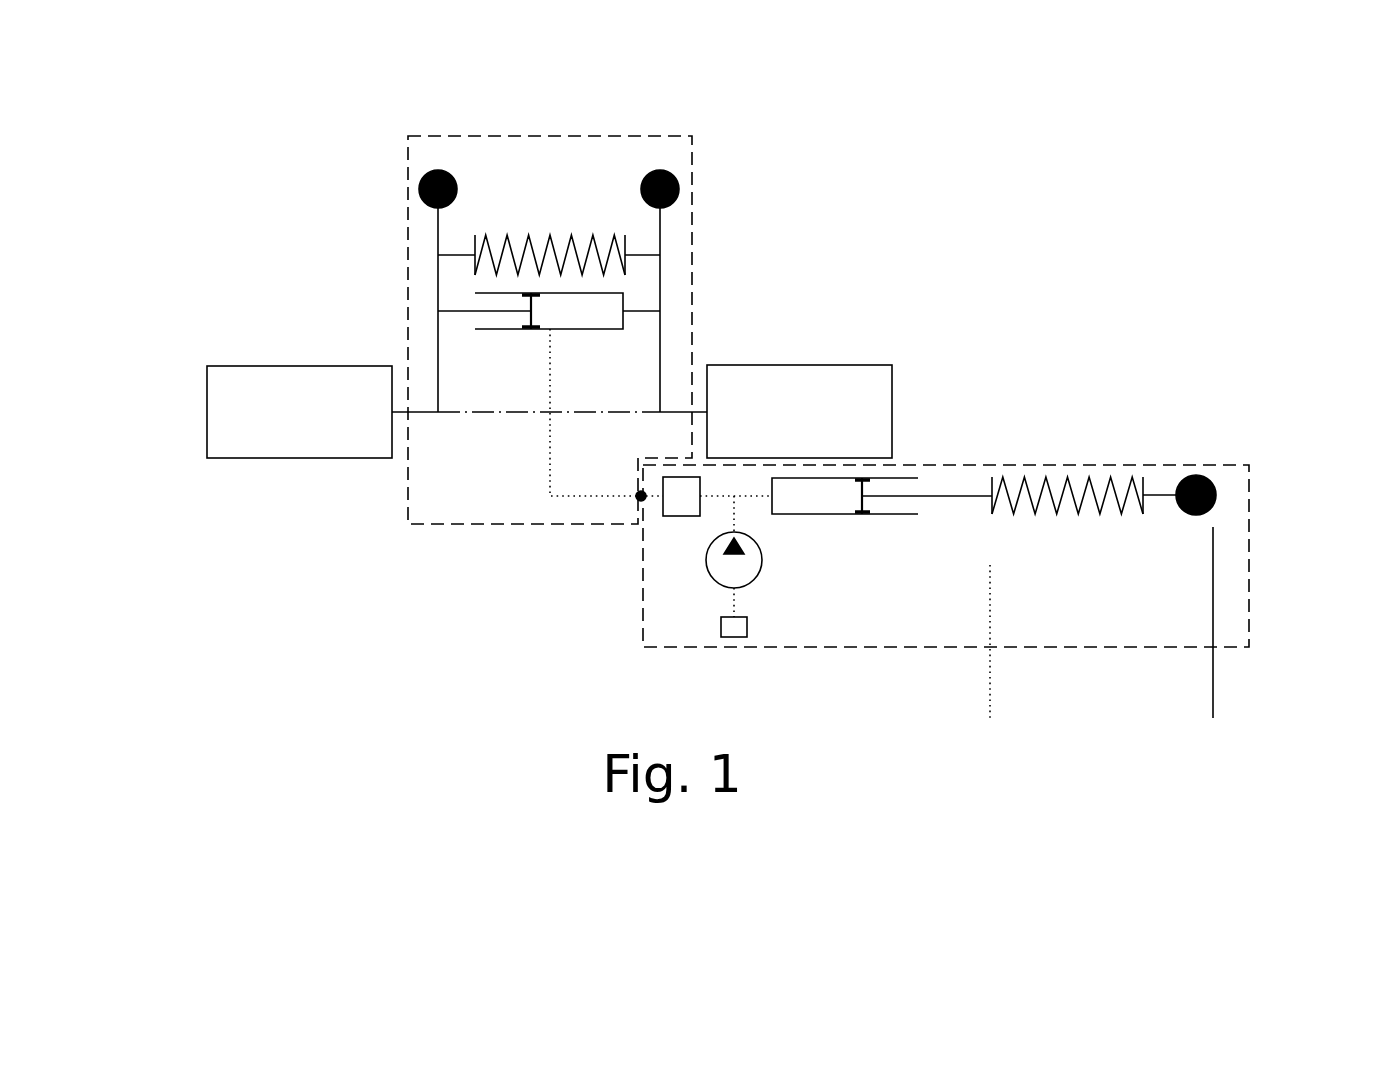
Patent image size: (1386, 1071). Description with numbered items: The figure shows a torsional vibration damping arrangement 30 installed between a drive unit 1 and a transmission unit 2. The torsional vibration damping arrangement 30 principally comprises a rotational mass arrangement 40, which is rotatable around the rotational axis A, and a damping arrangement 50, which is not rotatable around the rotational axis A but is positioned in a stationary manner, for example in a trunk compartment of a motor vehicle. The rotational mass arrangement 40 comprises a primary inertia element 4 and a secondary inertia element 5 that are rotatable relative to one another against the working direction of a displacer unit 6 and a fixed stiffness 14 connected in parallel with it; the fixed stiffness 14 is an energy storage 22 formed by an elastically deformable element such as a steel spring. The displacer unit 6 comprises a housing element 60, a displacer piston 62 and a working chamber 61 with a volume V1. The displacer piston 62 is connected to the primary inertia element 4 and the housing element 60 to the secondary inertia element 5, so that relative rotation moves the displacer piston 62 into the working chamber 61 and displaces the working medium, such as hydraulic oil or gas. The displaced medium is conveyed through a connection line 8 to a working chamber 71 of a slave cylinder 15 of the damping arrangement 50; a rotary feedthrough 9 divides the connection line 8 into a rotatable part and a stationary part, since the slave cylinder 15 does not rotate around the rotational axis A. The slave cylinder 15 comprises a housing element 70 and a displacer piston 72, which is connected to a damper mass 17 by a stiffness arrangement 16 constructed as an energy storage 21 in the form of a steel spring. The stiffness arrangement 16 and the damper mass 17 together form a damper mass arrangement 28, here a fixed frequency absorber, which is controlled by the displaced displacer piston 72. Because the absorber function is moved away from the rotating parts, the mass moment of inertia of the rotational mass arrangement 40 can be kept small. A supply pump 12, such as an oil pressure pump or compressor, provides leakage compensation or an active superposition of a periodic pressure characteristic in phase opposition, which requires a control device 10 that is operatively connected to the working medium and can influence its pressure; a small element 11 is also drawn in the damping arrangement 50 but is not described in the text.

The drive unit 1 is at (230, 388).
The transmission unit 2 is at (838, 365).
The primary inertia element 4 is at (419, 188).
The secondary inertia element 5 is at (662, 170).
The displacer unit 6 is at (599, 346).
The connection line 8 is at (548, 447).
The rotary feedthrough 9 is at (636, 501).
The control device 10 is at (671, 517).
The reservoir 11 is at (740, 631).
The supply pump 12 is at (748, 559).
The fixed stiffness 14 is at (543, 383).
The slave cylinder 15 is at (843, 521).
The stiffness arrangement 16 is at (1083, 490).
The damper mass 17 is at (1216, 500).
The energy storage 21 is at (1067, 495).
The energy storage 22 is at (476, 249).
The damper mass arrangement 28 is at (1213, 708).
The torsional vibration damping arrangement 30 is at (793, 141).
The rotational mass arrangement 40 is at (558, 136).
The damping arrangement 50 is at (1148, 465).
The housing element 60 is at (543, 289).
The working chamber 61 is at (596, 305).
The displacer piston 62 is at (525, 322).
The housing element 70 is at (896, 548).
The working chamber 71 is at (827, 503).
The displacer piston 72 is at (865, 487).
The rotational axis A is at (474, 413).
The volume V1 is at (579, 318).